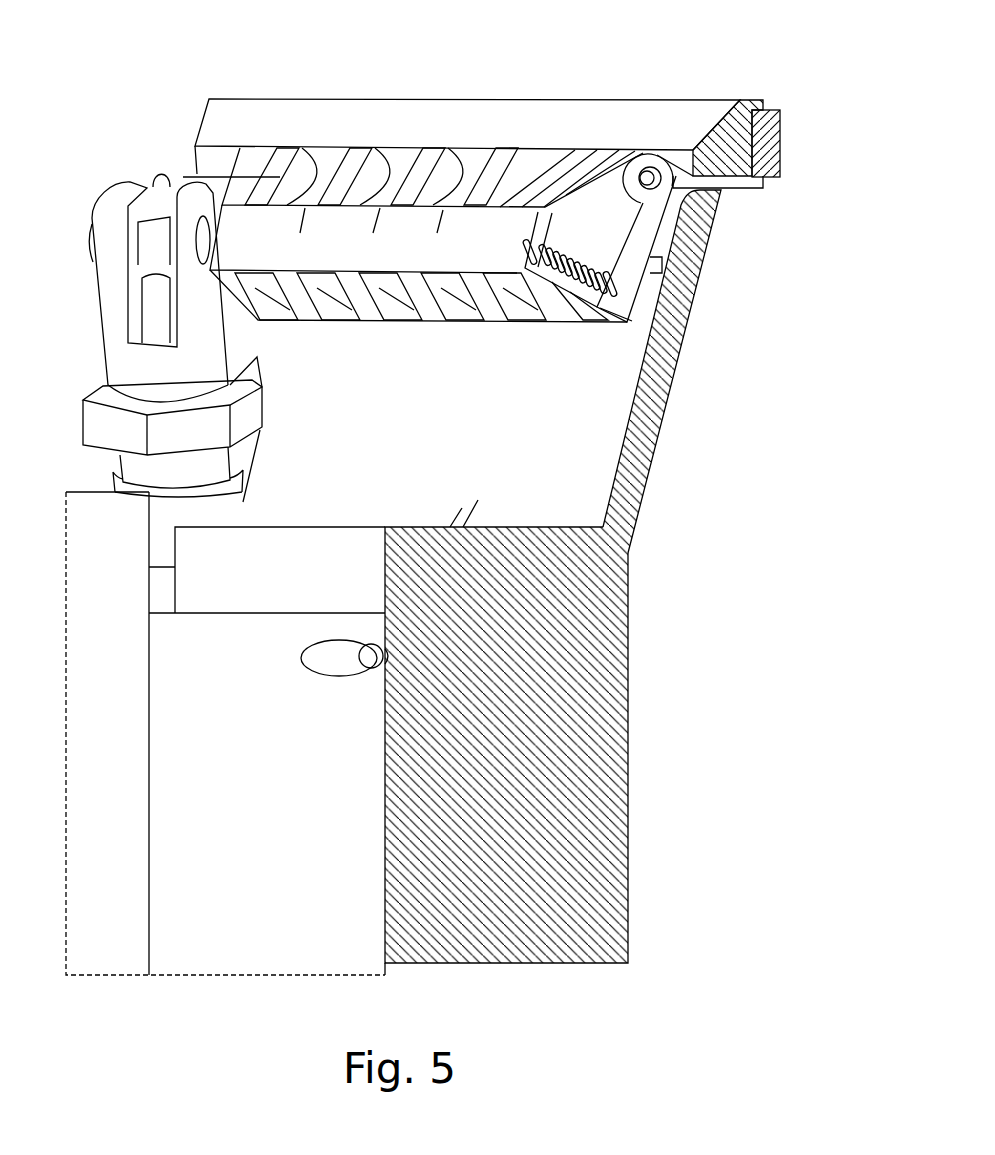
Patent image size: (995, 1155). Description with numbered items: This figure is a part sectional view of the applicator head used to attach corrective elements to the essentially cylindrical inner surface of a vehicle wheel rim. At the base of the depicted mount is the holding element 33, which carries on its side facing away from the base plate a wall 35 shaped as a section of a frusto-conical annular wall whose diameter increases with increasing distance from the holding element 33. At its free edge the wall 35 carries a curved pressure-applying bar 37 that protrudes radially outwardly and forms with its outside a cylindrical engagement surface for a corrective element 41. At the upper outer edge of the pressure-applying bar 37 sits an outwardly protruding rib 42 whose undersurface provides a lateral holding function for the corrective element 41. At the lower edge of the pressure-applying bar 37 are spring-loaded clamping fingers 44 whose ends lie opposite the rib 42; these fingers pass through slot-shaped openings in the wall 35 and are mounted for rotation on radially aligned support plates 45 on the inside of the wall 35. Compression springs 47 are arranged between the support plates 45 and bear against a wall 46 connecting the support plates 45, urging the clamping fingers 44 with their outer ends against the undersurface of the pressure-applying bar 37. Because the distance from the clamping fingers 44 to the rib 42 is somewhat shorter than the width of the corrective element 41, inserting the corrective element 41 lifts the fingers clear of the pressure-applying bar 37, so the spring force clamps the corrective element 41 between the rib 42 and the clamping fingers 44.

The holding element 33 is at (622, 790).
The wall 35 is at (650, 437).
The pressure-applying bar 37 is at (408, 114).
The corrective element 41 is at (765, 138).
The rib 42 is at (763, 106).
The clamping finger 44 is at (657, 240).
The support plate 45 is at (600, 210).
The wall 46 is at (287, 255).
The compression spring 47 is at (567, 280).